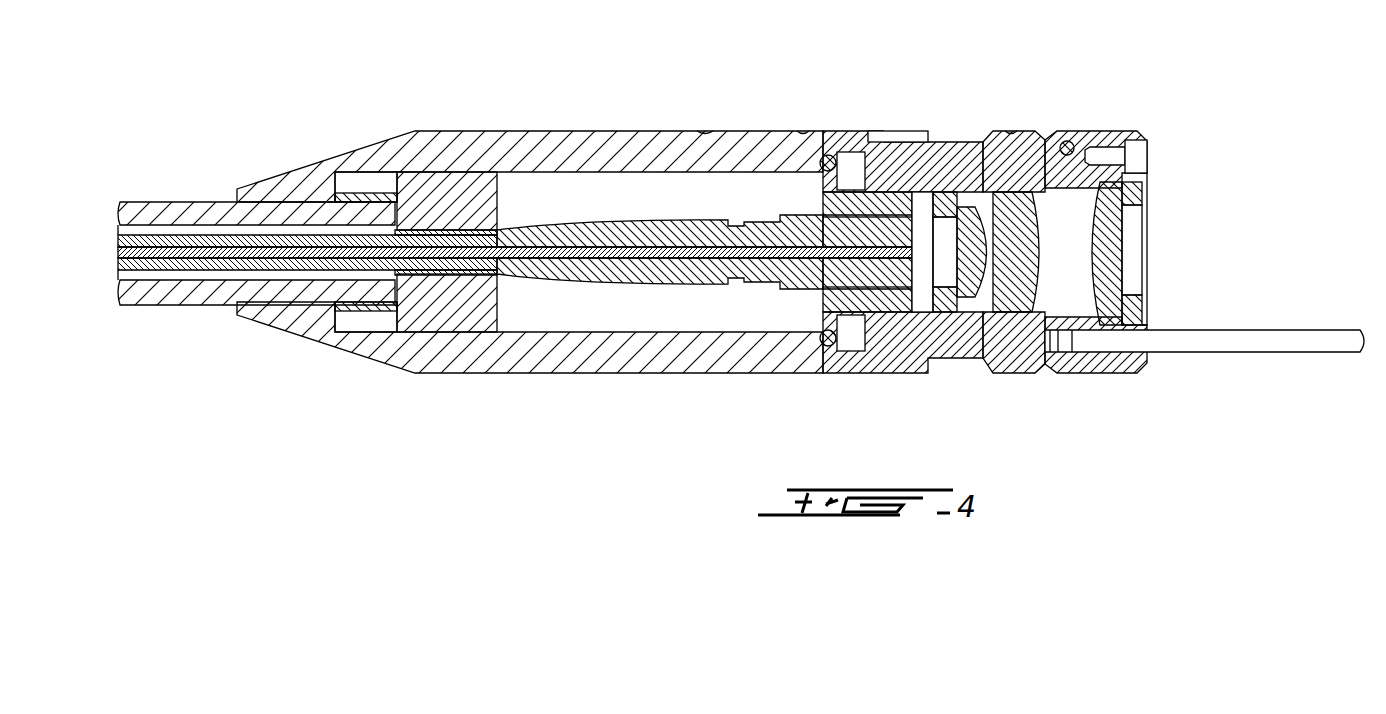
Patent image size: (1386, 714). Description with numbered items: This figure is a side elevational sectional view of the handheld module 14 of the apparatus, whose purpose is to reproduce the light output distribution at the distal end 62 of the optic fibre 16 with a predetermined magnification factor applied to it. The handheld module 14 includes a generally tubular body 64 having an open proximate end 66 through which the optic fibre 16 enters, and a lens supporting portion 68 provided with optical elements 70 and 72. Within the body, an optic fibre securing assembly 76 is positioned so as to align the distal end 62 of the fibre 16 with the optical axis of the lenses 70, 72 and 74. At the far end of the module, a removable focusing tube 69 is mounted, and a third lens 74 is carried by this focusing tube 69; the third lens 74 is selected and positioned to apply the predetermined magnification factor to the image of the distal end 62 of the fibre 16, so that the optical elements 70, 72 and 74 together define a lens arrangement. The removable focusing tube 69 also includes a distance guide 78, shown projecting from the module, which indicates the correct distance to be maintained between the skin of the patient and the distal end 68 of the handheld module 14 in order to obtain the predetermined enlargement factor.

The handheld module 14 is at (622, 398).
The optic fibre 16 is at (162, 202).
The distal end 62 is at (920, 242).
The tubular body 64 is at (635, 131).
The open proximate end 66 is at (237, 308).
The lens supporting portion 68 is at (1015, 187).
The removable focusing tube 69 is at (1110, 144).
The optical element 70 is at (977, 282).
The optical element 72 is at (1023, 282).
The third lens 74 is at (1112, 295).
The optic fibre securing assembly 76 is at (865, 312).
The distance guide 78 is at (1253, 343).